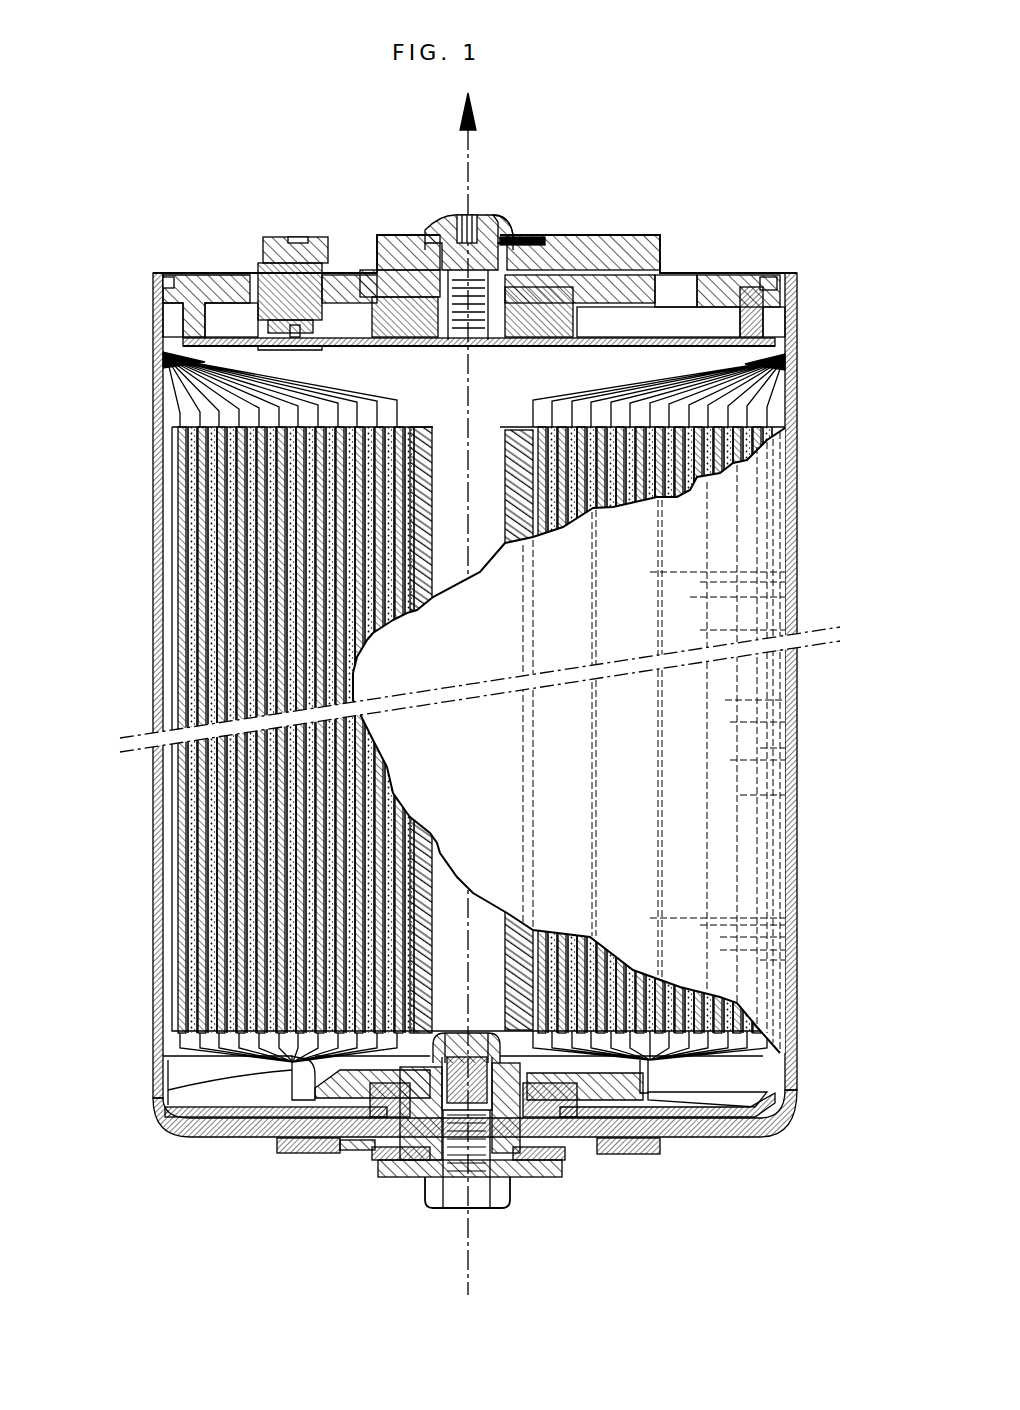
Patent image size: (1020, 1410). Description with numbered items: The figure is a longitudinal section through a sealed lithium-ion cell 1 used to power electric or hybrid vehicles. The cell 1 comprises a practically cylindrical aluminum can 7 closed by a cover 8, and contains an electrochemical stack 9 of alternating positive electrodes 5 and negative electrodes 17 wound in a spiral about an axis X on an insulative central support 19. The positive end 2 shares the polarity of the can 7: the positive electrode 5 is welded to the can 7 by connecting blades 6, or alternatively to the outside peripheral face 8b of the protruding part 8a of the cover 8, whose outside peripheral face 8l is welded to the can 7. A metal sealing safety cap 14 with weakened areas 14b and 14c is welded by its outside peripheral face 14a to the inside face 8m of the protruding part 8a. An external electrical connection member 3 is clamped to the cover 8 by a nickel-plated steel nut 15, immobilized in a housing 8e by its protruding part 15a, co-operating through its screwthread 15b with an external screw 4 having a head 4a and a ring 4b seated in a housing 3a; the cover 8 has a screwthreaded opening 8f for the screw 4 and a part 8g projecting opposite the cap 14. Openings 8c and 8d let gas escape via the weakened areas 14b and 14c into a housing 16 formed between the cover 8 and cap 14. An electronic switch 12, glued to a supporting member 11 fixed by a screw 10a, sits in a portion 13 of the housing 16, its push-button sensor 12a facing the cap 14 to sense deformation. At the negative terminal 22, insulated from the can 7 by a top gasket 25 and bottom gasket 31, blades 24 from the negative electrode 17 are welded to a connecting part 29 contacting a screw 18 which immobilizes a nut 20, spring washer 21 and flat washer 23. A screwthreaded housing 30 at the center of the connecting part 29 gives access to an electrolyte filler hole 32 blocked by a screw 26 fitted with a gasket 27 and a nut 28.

The cell 1 is at (822, 386).
The positive end 2 is at (776, 246).
The electrical connection member 3 is at (650, 222).
The housing 3a is at (540, 236).
The screw 4 is at (428, 215).
The head 4a is at (443, 228).
The ring 4b is at (520, 235).
The positive electrode 5 is at (772, 447).
The connecting blades 6 is at (200, 425).
The can 7 is at (155, 500).
The cover 8 is at (193, 265).
The protruding part 8a is at (165, 315).
The outside peripheral face 8b is at (780, 348).
The opening 8c is at (330, 276).
The opening 8d is at (695, 285).
The housing 8e is at (560, 260).
The screwthreaded opening 8f is at (480, 230).
The projecting part 8g is at (375, 270).
The outside peripheral face 8l is at (158, 295).
The inside face 8m is at (183, 342).
The electrochemical stack 9 is at (853, 532).
The screw 10a is at (295, 238).
The supporting member 11 is at (255, 280).
The electronic switch 12 is at (235, 318).
The sensor 12a is at (292, 342).
The portion of the housing 13 is at (200, 312).
The sealing safety cap 14 is at (672, 322).
The outside peripheral face 14a is at (165, 360).
The weakened area 14b is at (318, 348).
The weakened area 14c is at (600, 340).
The nut 15 is at (520, 348).
The protruding part 15a is at (555, 290).
The screwthread 15b is at (455, 330).
The housing 16 is at (345, 330).
The negative electrode 17 is at (725, 505).
The screw 18 is at (480, 1200).
The central support 19 is at (500, 487).
The nut 20 is at (398, 1162).
The spring washer 21 is at (415, 1170).
The negative terminal 22 is at (571, 1188).
The flat washer 23 is at (352, 1152).
The blades 24 is at (770, 1062).
The top gasket 25 is at (300, 1152).
The screw 26 is at (462, 1058).
The gasket 27 is at (497, 1040).
The nut 28 is at (652, 1073).
The connecting part 29 is at (300, 1066).
The screwthreaded housing 30 is at (530, 1165).
The bottom gasket 31 is at (200, 1092).
The electrolyte filler hole 32 is at (437, 1040).
The axis X is at (478, 165).